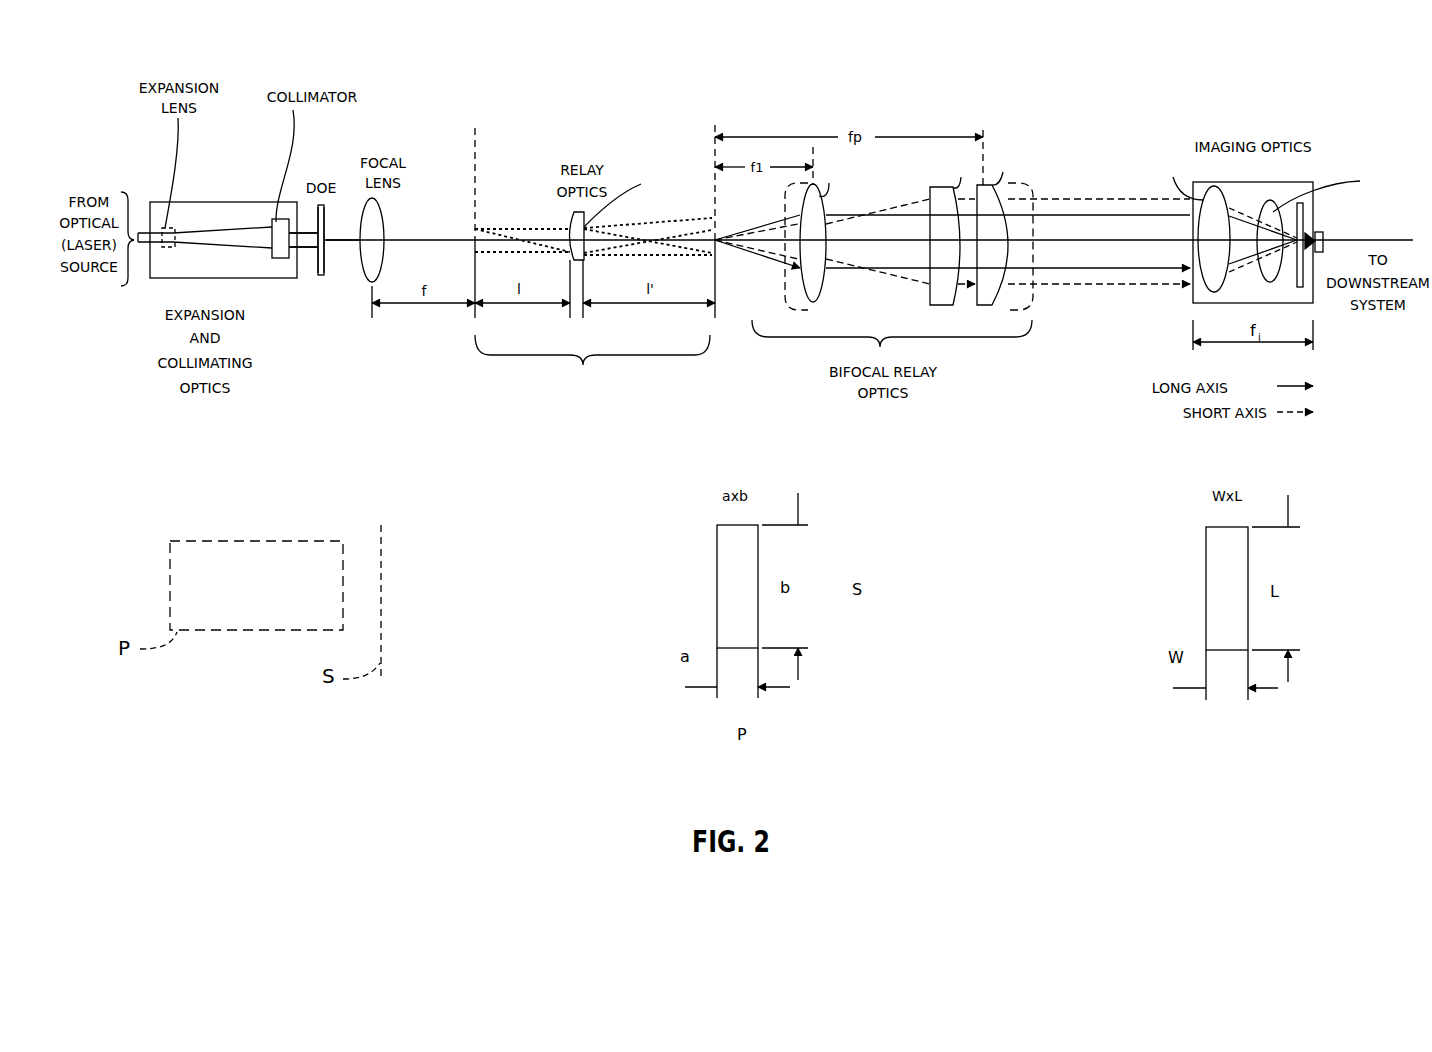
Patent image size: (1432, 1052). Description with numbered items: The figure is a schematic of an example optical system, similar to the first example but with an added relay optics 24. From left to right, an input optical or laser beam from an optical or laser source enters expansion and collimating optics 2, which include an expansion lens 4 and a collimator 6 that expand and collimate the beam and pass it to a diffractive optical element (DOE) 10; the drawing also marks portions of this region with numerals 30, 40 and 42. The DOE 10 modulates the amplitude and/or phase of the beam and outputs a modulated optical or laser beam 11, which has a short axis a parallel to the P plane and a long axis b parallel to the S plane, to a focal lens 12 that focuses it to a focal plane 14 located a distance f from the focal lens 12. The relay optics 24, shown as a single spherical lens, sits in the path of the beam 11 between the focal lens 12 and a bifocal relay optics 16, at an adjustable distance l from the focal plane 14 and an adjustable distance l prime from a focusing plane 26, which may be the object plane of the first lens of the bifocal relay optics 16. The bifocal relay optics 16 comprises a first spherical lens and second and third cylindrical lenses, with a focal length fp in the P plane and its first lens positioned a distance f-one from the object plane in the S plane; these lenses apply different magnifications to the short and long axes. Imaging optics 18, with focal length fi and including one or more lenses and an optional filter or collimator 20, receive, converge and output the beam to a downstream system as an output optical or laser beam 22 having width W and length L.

The expansion and collimating optics 2 is at (212, 202).
The expansion lens 4 is at (170, 229).
The collimator 6 is at (276, 219).
The diffractive optical element (DOE) 10 is at (320, 276).
The amplitude and/or phase modulated optical or laser beam 11 is at (342, 240).
The focal lens 12 is at (385, 229).
The focal plane 14 is at (474, 142).
The bifocal relay optics 16 is at (894, 425).
The imaging optics 18 is at (1300, 182).
The filter or collimator 20 is at (1304, 287).
The output optical or laser beam 22 is at (1337, 238).
The relay optics 24 is at (593, 281).
The focusing plane 26 is at (714, 139).
The DOE output surface 30 is at (324, 262).
The collimated beam 40 is at (307, 242).
The DOE input surface 42 is at (318, 277).